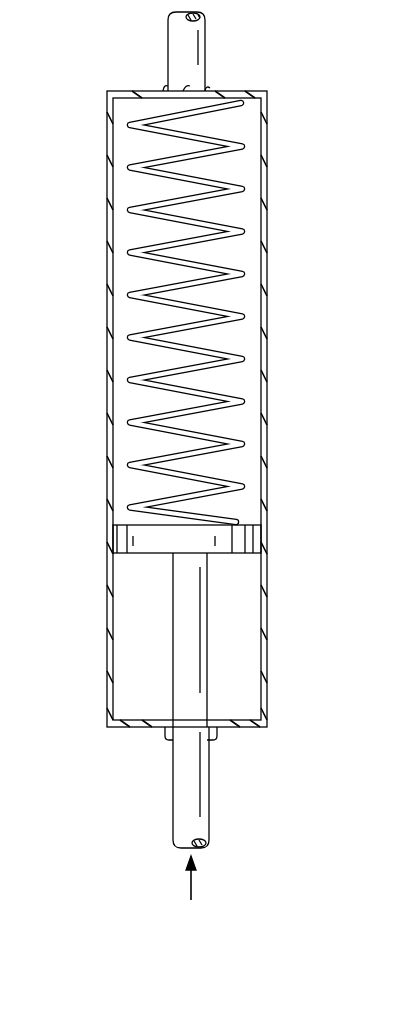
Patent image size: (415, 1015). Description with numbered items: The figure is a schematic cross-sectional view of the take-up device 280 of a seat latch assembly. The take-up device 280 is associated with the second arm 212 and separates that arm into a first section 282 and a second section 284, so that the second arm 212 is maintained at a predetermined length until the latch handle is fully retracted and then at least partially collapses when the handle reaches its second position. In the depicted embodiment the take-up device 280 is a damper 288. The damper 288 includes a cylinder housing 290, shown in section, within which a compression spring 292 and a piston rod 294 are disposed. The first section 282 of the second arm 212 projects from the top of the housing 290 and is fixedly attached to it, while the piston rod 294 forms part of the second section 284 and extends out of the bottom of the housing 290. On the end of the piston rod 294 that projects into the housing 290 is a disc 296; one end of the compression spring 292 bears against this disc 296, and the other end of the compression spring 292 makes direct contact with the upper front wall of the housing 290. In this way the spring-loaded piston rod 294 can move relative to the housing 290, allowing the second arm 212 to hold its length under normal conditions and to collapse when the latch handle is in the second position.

The take-up device 280 is at (96, 308).
The first section 282 is at (193, 70).
The second section 284 is at (195, 805).
The damper 288 is at (271, 320).
The cylinder housing 290 is at (267, 432).
The compression spring 292 is at (236, 197).
The piston rod 294 is at (195, 627).
The disc 296 is at (243, 533).
The second arm 212 is at (172, 765).